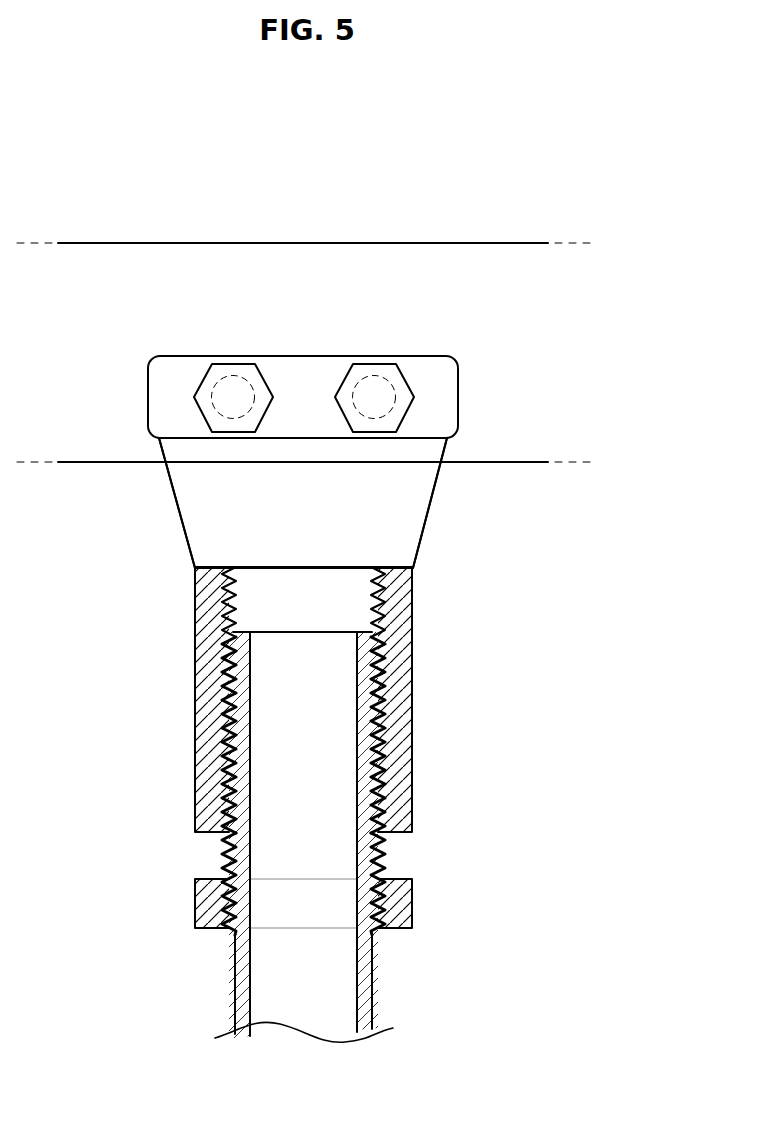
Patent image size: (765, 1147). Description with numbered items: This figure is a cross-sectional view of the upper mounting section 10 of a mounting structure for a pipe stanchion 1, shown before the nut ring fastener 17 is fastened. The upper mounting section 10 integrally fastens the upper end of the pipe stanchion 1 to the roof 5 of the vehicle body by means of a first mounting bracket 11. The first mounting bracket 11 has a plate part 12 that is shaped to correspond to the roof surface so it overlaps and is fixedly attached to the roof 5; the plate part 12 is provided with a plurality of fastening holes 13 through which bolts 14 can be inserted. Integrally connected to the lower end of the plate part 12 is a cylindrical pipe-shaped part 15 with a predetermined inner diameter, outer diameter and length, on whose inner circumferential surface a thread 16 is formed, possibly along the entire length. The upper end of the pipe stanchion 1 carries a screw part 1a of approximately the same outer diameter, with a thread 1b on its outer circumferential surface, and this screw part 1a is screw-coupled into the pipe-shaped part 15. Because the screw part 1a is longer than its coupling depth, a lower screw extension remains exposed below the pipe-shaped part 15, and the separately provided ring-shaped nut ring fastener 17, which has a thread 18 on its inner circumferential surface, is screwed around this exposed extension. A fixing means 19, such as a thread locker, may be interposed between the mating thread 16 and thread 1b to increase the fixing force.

The pipe stanchion 1 is at (319, 837).
The screw part 1a is at (392, 735).
The thread 1b is at (319, 872).
The roof 5 is at (465, 283).
The upper mounting section 10 is at (330, 747).
The first mounting bracket 11 is at (455, 520).
The plate part 12 is at (200, 505).
The fastening holes 13 is at (213, 402).
The bolts 14 is at (262, 383).
The pipe-shaped part 15 is at (195, 710).
The thread 16 is at (225, 572).
The nut ring fastener 17 is at (413, 898).
The thread 18 is at (233, 903).
The fixing means 19 is at (383, 722).